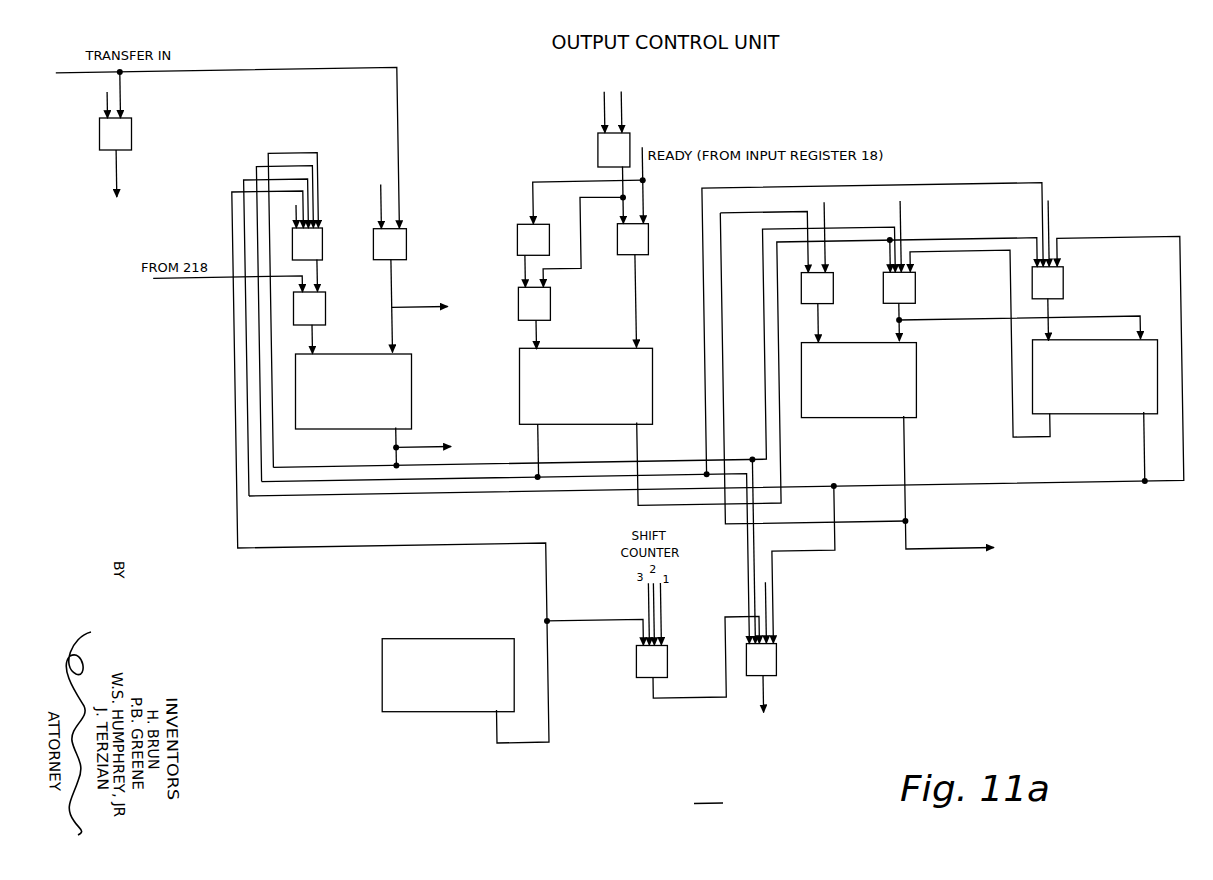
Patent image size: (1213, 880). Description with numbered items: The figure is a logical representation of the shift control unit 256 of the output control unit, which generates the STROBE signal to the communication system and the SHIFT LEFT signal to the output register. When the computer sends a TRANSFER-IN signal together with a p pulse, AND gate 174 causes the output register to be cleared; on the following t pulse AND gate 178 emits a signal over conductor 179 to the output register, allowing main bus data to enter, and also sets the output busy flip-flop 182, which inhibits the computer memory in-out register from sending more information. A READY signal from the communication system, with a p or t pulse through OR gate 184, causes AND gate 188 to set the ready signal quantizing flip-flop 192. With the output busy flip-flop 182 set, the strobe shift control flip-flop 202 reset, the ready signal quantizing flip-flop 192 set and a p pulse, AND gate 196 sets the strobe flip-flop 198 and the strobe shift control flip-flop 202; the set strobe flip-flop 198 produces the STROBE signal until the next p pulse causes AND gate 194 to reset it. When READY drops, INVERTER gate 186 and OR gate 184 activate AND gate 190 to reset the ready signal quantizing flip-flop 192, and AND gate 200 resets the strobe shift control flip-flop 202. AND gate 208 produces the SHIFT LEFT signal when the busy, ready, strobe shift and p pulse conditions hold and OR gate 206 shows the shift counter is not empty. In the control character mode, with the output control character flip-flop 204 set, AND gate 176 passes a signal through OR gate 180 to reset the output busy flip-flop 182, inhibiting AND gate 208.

The AND gate 174 is at (132, 132).
The AND gate 176 is at (325, 256).
The AND gate 178 is at (407, 258).
The conductor 179 is at (408, 314).
The OR gate 180 is at (326, 315).
The output busy flip-flop 182 is at (413, 400).
The OR gate 184 is at (598, 152).
The INVERTER gate 186 is at (518, 243).
The AND gate 188 is at (650, 242).
The AND gate 190 is at (553, 308).
The ready signal quantizing flip-flop 192 is at (653, 398).
The AND gate 194 is at (854, 283).
The AND gate 196 is at (938, 282).
The strobe flip-flop 198 is at (918, 384).
The AND gate 200 is at (1063, 287).
The strobe shift control flip-flop 202 is at (1113, 416).
The output control character flip-flop 204 is at (442, 635).
The OR gate 206 is at (670, 664).
The AND gate 208 is at (781, 662).
The shift control unit 256 is at (625, 794).